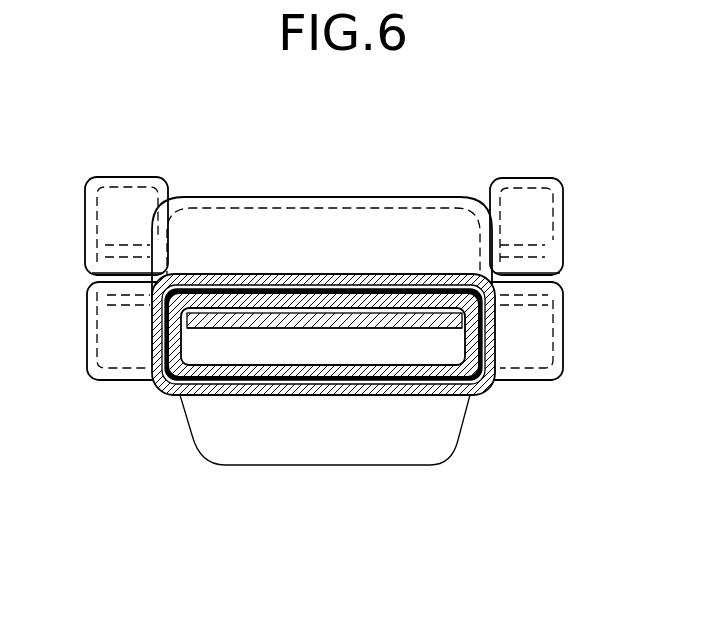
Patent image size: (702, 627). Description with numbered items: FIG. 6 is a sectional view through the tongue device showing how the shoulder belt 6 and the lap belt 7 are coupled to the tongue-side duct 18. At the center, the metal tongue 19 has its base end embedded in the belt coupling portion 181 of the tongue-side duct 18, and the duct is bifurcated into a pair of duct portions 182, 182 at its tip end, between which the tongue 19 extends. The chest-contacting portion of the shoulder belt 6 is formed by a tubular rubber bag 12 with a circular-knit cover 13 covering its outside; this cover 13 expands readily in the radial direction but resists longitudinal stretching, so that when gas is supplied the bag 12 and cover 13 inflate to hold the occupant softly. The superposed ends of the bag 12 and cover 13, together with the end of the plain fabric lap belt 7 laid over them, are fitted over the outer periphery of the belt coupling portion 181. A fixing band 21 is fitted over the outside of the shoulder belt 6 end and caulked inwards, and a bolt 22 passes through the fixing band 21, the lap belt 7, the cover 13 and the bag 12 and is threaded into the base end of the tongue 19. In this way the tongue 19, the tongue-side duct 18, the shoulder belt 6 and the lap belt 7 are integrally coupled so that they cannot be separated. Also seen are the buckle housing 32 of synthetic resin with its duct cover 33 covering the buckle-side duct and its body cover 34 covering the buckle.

The shoulder belt 6 is at (353, 384).
The lap belt 7 is at (363, 289).
The bag 12 is at (313, 388).
The cover 13 is at (268, 392).
The tongue-side duct 18 is at (181, 425).
The belt coupling portion 181 is at (323, 375).
The duct portions 182 is at (592, 393).
The tongue 19 is at (275, 328).
The fixing band 21 is at (487, 393).
The bolt 22 is at (320, 328).
The buckle housing 32 is at (370, 192).
The duct cover 33 is at (112, 176).
The body cover 34 is at (260, 198).